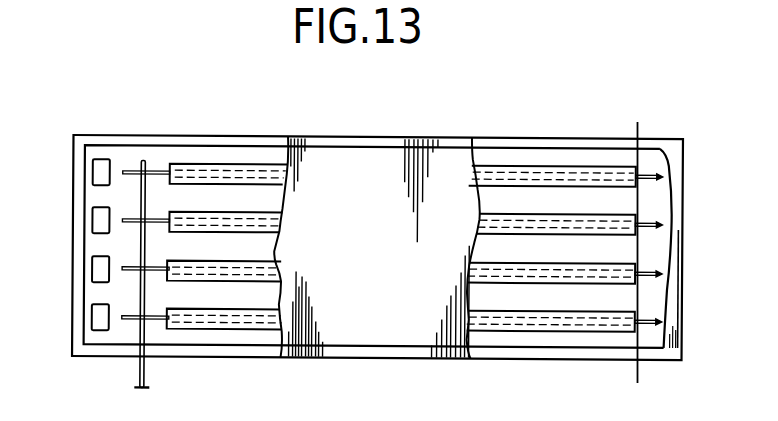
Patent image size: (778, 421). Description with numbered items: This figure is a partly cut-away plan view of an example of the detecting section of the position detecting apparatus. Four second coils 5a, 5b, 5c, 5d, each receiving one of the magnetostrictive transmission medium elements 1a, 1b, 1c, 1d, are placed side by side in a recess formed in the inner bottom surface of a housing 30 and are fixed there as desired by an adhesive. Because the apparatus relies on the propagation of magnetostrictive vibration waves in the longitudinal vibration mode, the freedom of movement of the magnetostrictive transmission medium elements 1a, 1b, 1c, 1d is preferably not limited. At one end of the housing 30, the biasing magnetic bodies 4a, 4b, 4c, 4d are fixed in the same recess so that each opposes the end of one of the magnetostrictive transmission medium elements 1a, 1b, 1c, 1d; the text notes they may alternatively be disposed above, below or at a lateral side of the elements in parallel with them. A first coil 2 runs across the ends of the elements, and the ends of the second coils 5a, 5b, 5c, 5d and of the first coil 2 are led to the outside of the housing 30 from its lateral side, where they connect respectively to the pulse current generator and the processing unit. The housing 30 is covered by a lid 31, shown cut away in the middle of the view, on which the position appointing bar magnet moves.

The first coil 2 is at (147, 138).
The housing 30 is at (610, 144).
The lid 31 is at (395, 152).
The second coil 5a is at (557, 329).
The second coil 5b is at (537, 268).
The second coil 5c is at (538, 219).
The second coil 5d is at (533, 170).
The magnetostrictive transmission medium element 1a is at (661, 323).
The magnetostrictive transmission medium element 1b is at (661, 275).
The magnetostrictive transmission medium element 1c is at (661, 227).
The magnetostrictive transmission medium element 1d is at (661, 178).
The biasing magnetic body 4a is at (100, 319).
The biasing magnetic body 4b is at (100, 270).
The biasing magnetic body 4c is at (100, 221).
The biasing magnetic body 4d is at (100, 173).